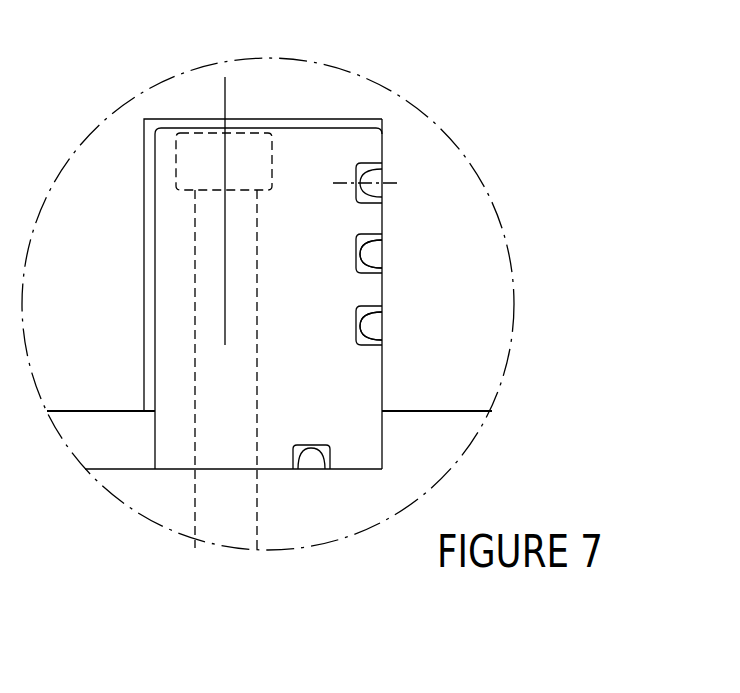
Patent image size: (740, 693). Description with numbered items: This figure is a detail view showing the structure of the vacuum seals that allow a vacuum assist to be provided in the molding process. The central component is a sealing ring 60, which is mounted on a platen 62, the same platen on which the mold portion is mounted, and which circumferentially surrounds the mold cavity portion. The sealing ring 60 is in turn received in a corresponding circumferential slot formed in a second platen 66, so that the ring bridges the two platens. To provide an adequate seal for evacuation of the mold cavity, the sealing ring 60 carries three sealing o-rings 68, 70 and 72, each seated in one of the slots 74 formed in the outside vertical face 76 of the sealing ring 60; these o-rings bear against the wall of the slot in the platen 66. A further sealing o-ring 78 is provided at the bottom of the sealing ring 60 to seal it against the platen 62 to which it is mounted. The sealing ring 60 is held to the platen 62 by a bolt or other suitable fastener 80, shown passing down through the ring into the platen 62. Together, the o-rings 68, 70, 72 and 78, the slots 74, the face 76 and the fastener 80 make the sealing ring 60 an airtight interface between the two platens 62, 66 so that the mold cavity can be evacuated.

The sealing ring 60 is at (310, 163).
The platen 62 is at (269, 440).
The platen 66 is at (444, 299).
The sealing o-ring 68 is at (377, 183).
The sealing o-ring 70 is at (374, 256).
The sealing o-ring 72 is at (371, 322).
The slots 74 is at (371, 163).
The outside vertical face 76 is at (382, 129).
The sealing o-ring 78 is at (312, 465).
The fastener 80 is at (247, 157).